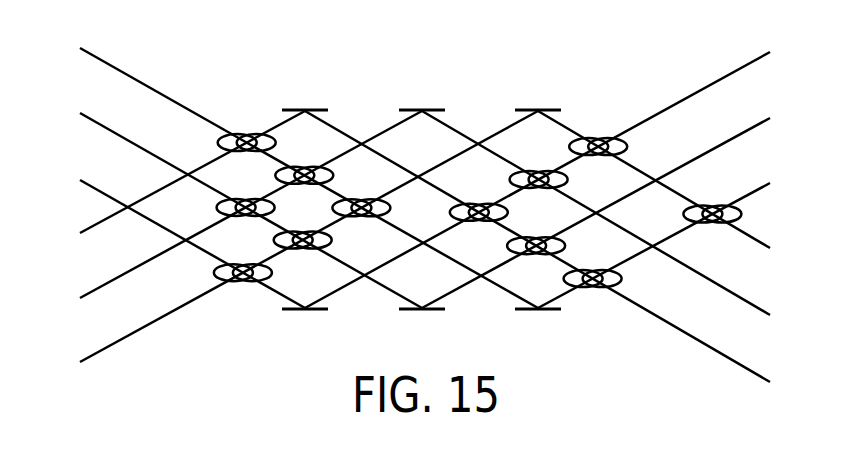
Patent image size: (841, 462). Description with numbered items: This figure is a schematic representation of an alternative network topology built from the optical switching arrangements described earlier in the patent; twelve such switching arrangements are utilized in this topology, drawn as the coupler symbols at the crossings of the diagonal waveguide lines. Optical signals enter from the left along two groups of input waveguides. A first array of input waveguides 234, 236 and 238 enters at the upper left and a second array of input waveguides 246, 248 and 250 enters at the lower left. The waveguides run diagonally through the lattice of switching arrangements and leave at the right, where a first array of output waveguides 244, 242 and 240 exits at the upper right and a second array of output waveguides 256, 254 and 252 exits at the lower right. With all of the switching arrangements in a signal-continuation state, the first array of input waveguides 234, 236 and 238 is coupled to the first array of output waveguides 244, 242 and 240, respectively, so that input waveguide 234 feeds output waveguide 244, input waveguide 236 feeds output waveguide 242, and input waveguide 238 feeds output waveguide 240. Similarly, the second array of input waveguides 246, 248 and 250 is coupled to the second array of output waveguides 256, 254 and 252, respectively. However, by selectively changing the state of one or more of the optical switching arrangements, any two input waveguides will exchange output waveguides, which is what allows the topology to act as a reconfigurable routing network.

The input waveguide 234 is at (93, 55).
The input waveguide 236 is at (93, 120).
The input waveguide 238 is at (93, 187).
The input waveguide 246 is at (93, 226).
The input waveguide 248 is at (93, 291).
The input waveguide 250 is at (93, 355).
The output waveguide 240 is at (748, 64).
The output waveguide 242 is at (748, 130).
The output waveguide 244 is at (743, 198).
The output waveguide 252 is at (740, 230).
The output waveguide 254 is at (737, 296).
The output waveguide 256 is at (737, 363).